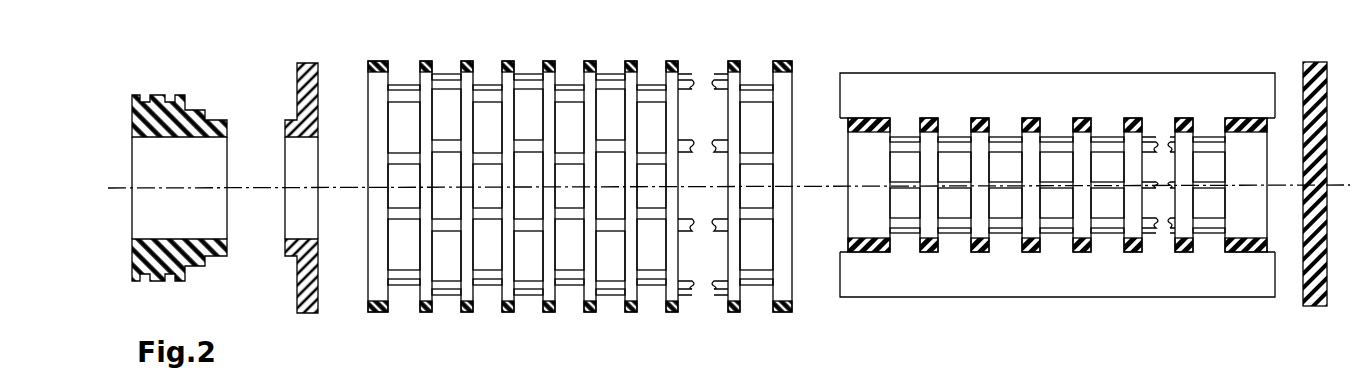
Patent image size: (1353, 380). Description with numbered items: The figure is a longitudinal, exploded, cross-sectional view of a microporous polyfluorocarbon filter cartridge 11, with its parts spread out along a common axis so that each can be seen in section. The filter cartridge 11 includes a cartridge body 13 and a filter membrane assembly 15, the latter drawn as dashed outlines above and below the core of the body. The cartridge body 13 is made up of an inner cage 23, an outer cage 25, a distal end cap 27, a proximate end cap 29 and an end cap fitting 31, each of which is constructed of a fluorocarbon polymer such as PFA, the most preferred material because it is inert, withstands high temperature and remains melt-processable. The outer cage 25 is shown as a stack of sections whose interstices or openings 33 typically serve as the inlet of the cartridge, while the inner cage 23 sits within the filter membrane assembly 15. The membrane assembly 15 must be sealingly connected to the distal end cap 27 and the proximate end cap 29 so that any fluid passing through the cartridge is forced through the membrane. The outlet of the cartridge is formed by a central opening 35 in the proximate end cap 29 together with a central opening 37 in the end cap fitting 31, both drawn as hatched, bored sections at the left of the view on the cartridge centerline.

The filter cartridge 11 is at (1057, 169).
The cartridge body 13 is at (580, 182).
The filter membrane assembly 15 is at (1035, 104).
The inner cage 23 is at (871, 245).
The outer cage 25 is at (972, 379).
The distal end cap 27 is at (1317, 308).
The proximate end cap 29 is at (277, 170).
The end cap fitting 31 is at (148, 122).
The openings 33 is at (615, 103).
The central opening 35 is at (300, 213).
The central opening 37 is at (169, 177).